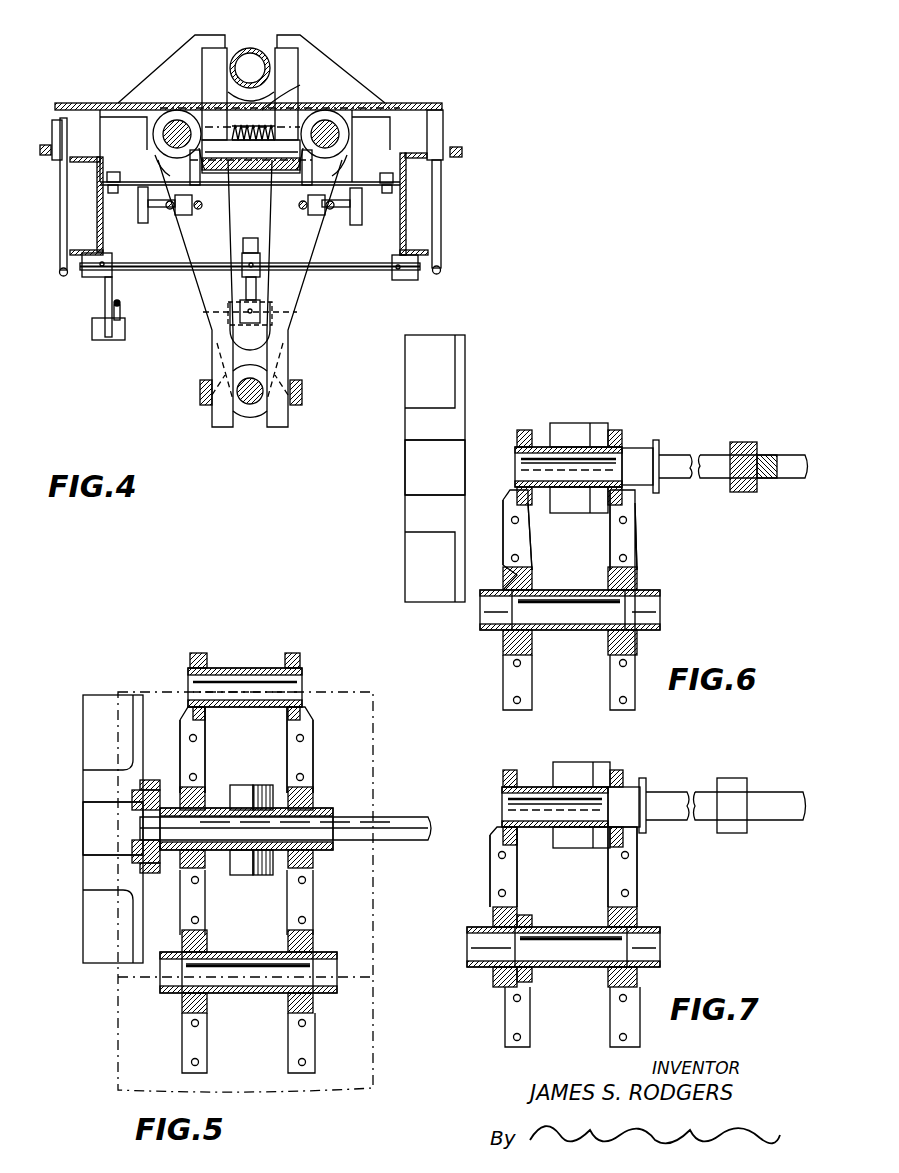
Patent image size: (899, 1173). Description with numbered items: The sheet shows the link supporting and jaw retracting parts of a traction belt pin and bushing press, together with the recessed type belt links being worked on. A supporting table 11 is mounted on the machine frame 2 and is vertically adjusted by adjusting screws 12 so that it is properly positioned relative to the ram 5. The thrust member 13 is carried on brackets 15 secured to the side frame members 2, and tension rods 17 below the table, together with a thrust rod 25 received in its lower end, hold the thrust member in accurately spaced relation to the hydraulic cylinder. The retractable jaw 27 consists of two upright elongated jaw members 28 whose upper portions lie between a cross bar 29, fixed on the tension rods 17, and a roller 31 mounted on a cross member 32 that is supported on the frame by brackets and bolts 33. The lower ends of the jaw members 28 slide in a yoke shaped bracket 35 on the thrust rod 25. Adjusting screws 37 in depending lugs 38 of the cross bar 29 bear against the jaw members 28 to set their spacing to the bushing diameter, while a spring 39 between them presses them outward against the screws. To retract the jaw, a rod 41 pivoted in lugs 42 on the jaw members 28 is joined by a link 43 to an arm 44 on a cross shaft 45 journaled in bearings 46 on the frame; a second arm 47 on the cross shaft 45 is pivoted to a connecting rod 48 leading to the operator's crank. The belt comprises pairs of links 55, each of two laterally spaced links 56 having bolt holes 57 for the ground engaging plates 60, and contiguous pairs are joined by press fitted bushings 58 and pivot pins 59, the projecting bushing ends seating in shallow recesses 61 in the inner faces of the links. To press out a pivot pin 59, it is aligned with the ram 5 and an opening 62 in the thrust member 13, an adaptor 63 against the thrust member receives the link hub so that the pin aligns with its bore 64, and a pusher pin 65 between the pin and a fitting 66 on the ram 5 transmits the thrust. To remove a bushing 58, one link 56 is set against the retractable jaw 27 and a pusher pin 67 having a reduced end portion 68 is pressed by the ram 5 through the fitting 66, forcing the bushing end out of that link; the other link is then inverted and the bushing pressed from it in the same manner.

In FIG. 4, the machine frame 2 is at (100, 215).
In FIG. 6, the ram 5 is at (785, 456).
In FIG. 7, the ram 5 is at (787, 815).
In FIG. 4, the supporting table 11 is at (428, 104).
In FIG. 4, the adjusting screws 12 is at (60, 236).
In FIG. 4, the thrust member 13 is at (340, 55).
In FIG. 6, the thrust member 13 is at (462, 395).
In FIG. 5, the thrust member 13 is at (83, 782).
In FIG. 4, the brackets 15 is at (128, 110).
In FIG. 4, the tension rods 17 is at (177, 134).
In FIG. 4, the thrust rod 25 is at (250, 404).
In FIG. 4, the retractable jaw 27 is at (300, 45).
In FIG. 6, the retractable jaw 27 is at (593, 423).
In FIG. 7, the retractable jaw 27 is at (596, 762).
In FIG. 5, the retractable jaw 27 is at (262, 876).
In FIG. 4, the jaw members 28 is at (212, 48).
In FIG. 6, the jaw members 28 is at (567, 423).
In FIG. 7, the jaw members 28 is at (573, 762).
In FIG. 5, the jaw members 28 is at (255, 785).
In FIG. 4, the cross bar 29 is at (285, 98).
In FIG. 4, the roller 31 is at (262, 173).
In FIG. 4, the cross member 32 is at (135, 182).
In FIG. 4, the brackets and bolts 33 is at (108, 172).
In FIG. 4, the yoke shaped bracket 35 is at (302, 385).
In FIG. 4, the adjusting screws 37 is at (138, 215).
In FIG. 4, the depending lugs 38 is at (180, 216).
In FIG. 4, the spring 39 is at (232, 128).
In FIG. 4, the rod 41 is at (272, 312).
In FIG. 4, the lugs 42 is at (235, 330).
In FIG. 4, the link 43 is at (246, 293).
In FIG. 4, the arm 44 is at (250, 238).
In FIG. 4, the cross shaft 45 is at (385, 270).
In FIG. 4, the bearings 46 is at (95, 277).
In FIG. 4, the arm 47 is at (105, 295).
In FIG. 4, the connecting rod 48 is at (120, 305).
In FIG. 4, the pairs of links 55 is at (212, 330).
In FIG. 6, the pairs of links 55 is at (500, 675).
In FIG. 7, the pairs of links 55 is at (648, 883).
In FIG. 5, the pairs of links 55 is at (316, 728).
In FIG. 6, the links 56 is at (505, 538).
In FIG. 7, the links 56 is at (510, 874).
In FIG. 5, the links 56 is at (190, 752).
In FIG. 6, the bolt holes 57 is at (519, 557).
In FIG. 7, the bolt holes 57 is at (498, 891).
In FIG. 5, the bolt holes 57 is at (296, 777).
In FIG. 4, the bushings 58 is at (250, 48).
In FIG. 6, the bushings 58 is at (535, 447).
In FIG. 7, the bushings 58 is at (535, 787).
In FIG. 5, the bushings 58 is at (240, 668).
In FIG. 5, the pivot pins 59 is at (318, 805).
In FIG. 5, the ground engaging plates 60 is at (375, 745).
In FIG. 6, the recesses 61 is at (505, 590).
In FIG. 7, the recesses 61 is at (493, 915).
In FIG. 5, the recesses 61 is at (183, 790).
In FIG. 6, the opening 62 is at (428, 475).
In FIG. 5, the opening 62 is at (90, 842).
In FIG. 5, the adaptor 63 is at (152, 873).
In FIG. 5, the bore 64 is at (135, 828).
In FIG. 5, the pusher pin 65 is at (400, 817).
In FIG. 6, the fitting 66 is at (748, 492).
In FIG. 7, the fitting 66 is at (728, 778).
In FIG. 6, the pusher pin 67 is at (645, 448).
In FIG. 7, the pusher pin 67 is at (662, 793).
In FIG. 6, the reduced end portion 68 is at (622, 467).
In FIG. 7, the reduced end portion 68 is at (608, 807).